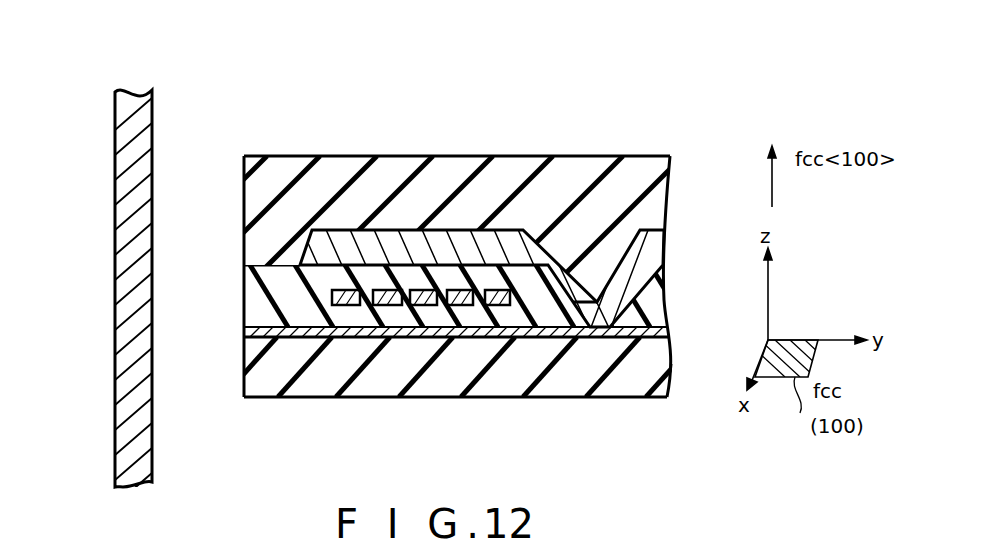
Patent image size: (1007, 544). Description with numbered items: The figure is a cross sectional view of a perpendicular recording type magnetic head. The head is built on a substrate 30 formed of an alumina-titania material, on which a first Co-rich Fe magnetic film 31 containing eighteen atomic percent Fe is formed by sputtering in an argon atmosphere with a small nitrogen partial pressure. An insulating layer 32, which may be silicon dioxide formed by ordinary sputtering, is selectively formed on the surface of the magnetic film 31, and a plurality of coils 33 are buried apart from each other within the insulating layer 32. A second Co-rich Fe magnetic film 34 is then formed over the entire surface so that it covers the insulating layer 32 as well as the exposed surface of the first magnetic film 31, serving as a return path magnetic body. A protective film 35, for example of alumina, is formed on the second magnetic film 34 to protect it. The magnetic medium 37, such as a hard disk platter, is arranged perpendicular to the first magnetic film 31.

The substrate 30 is at (448, 367).
The first Co-rich Fe magnetic film 31 is at (244, 332).
The insulating layer 32 is at (243, 298).
The coils 33 is at (346, 305).
The second Co-rich Fe magnetic film 34 is at (662, 244).
The protective film 35 is at (668, 183).
The magnetic medium 37 is at (152, 435).